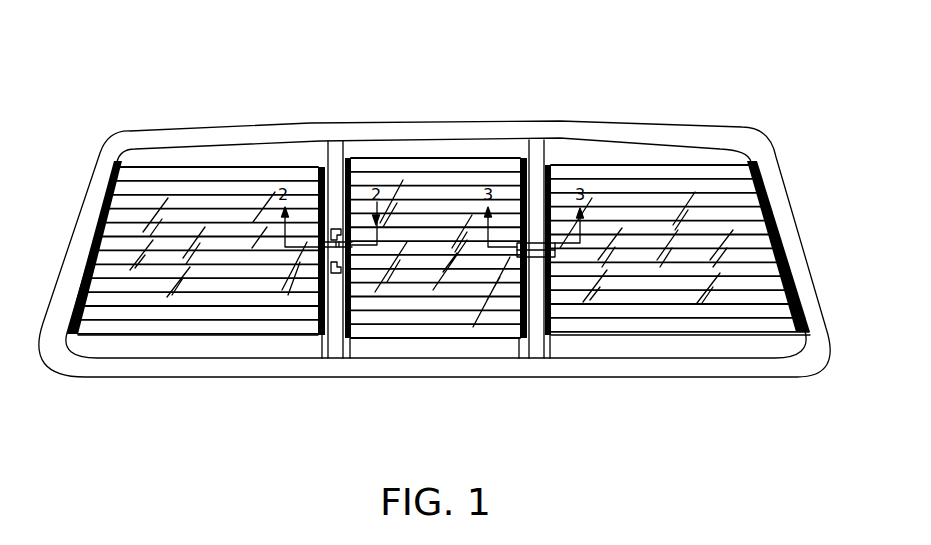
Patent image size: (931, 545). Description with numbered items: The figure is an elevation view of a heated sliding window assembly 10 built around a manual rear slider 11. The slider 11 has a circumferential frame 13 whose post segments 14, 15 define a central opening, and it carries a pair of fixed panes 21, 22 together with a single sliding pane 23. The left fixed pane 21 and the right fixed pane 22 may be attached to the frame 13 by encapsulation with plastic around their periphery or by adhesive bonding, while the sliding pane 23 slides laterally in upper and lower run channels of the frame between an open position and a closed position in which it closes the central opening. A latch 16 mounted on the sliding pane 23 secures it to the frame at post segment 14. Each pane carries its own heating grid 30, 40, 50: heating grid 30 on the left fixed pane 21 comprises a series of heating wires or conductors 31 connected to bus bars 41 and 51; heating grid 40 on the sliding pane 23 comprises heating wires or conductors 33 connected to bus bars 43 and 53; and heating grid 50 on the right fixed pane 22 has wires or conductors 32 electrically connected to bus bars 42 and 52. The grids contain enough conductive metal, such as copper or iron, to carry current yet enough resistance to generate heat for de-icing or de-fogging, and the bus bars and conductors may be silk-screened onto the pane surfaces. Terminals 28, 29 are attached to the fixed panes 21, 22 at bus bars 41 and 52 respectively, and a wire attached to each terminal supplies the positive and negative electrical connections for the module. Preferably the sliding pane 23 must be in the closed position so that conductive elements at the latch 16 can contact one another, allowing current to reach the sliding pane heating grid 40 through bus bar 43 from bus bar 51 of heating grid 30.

The heated sliding window assembly 10 is at (241, 45).
The manual rear slider 11 is at (99, 132).
The circumferential frame 13 is at (172, 137).
The post segment 14 is at (332, 147).
The post segment 15 is at (534, 146).
The latch 16 is at (314, 268).
The left fixed pane 21 is at (243, 150).
The right fixed pane 22 is at (648, 153).
The sliding pane 23 is at (422, 148).
The terminal 28 is at (117, 160).
The terminal 29 is at (752, 160).
The heating grid 30 is at (69, 254).
The heating wires or conductors 31 is at (190, 336).
The wires or conductors 32 is at (693, 335).
The heating wires or conductors 33 is at (437, 337).
The heating grid 40 is at (490, 134).
The bus bar 41 is at (67, 334).
The bus bar 42 is at (548, 358).
The bus bar 43 is at (340, 358).
The heating grid 50 is at (780, 202).
The bus bar 51 is at (321, 358).
The bus bar 52 is at (797, 340).
The bus bar 53 is at (523, 355).